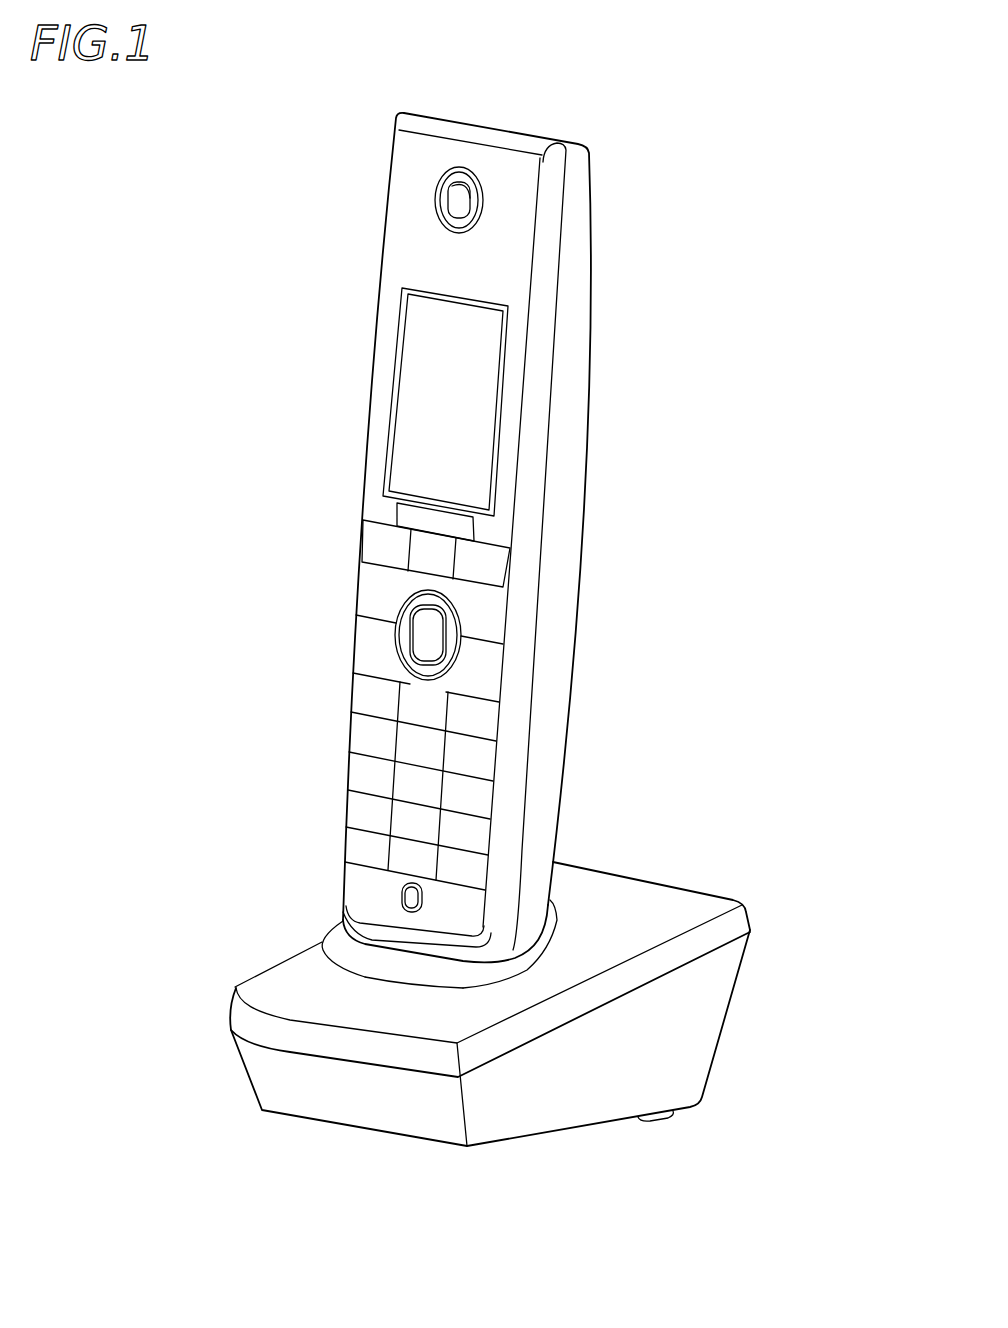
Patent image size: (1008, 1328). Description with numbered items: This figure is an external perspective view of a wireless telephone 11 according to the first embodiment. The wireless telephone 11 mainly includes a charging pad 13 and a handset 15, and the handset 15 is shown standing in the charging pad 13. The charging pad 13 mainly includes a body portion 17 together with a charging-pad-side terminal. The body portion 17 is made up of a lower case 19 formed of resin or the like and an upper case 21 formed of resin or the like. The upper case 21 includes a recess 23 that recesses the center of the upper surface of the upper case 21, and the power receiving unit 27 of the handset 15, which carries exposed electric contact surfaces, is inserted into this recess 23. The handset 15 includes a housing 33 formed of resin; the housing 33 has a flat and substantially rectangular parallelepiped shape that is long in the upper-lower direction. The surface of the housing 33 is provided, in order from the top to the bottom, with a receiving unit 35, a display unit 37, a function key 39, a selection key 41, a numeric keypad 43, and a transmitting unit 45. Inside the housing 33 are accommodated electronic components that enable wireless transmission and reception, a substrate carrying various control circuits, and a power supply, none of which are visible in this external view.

The wireless telephone 11 is at (122, 630).
The charging pad 13 is at (220, 925).
The handset 15 is at (318, 589).
The body portion 17 is at (833, 1050).
The lower case 19 is at (725, 1023).
The upper case 21 is at (760, 908).
The recess 23 is at (356, 958).
The power receiving unit 27 is at (400, 947).
The housing 33 is at (593, 228).
The receiving unit 35 is at (457, 190).
The display unit 37 is at (398, 310).
The function key 39 is at (418, 556).
The selection key 41 is at (425, 633).
The numeric keypad 43 is at (338, 678).
The transmitting unit 45 is at (402, 896).